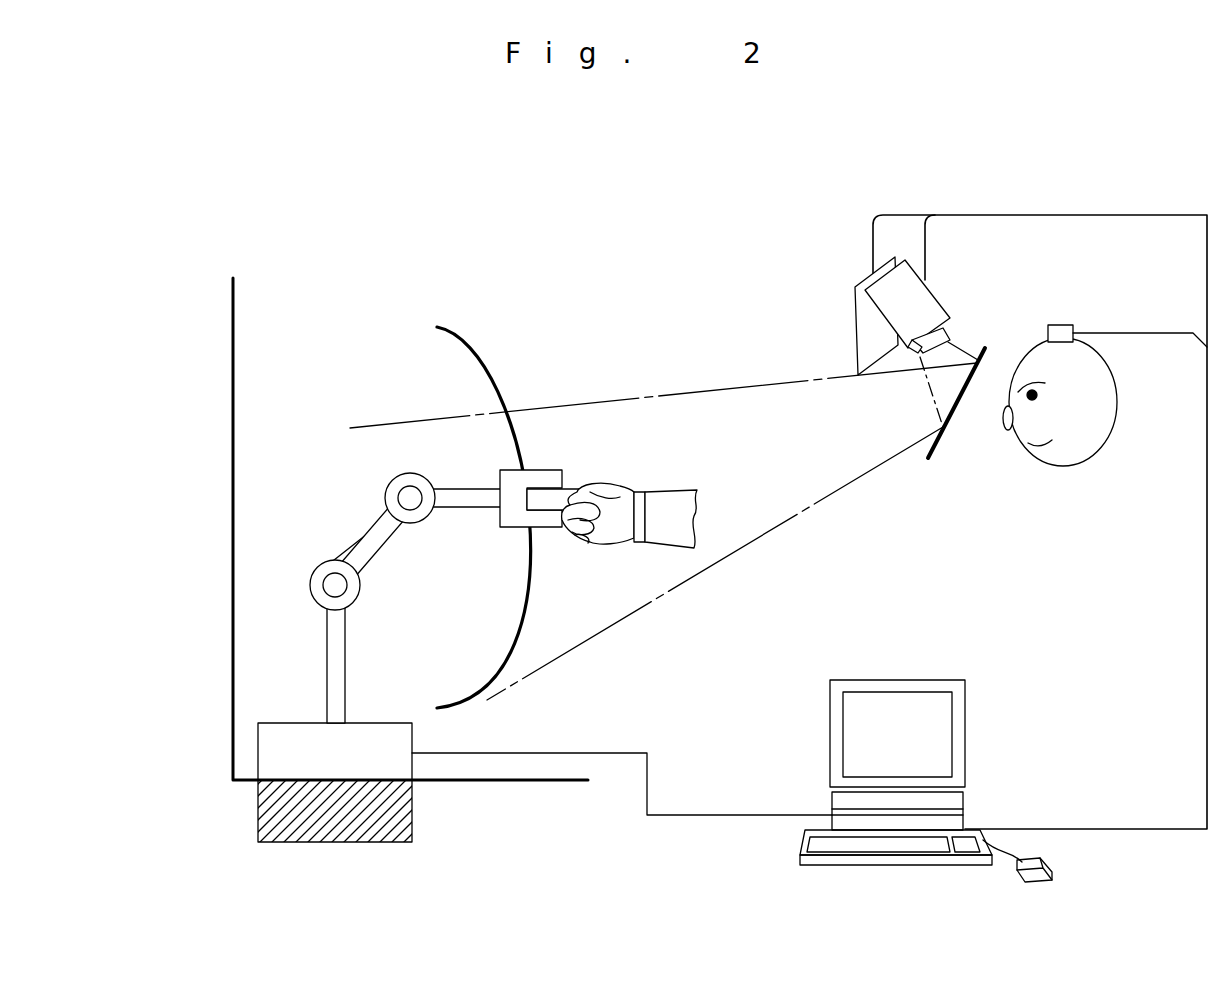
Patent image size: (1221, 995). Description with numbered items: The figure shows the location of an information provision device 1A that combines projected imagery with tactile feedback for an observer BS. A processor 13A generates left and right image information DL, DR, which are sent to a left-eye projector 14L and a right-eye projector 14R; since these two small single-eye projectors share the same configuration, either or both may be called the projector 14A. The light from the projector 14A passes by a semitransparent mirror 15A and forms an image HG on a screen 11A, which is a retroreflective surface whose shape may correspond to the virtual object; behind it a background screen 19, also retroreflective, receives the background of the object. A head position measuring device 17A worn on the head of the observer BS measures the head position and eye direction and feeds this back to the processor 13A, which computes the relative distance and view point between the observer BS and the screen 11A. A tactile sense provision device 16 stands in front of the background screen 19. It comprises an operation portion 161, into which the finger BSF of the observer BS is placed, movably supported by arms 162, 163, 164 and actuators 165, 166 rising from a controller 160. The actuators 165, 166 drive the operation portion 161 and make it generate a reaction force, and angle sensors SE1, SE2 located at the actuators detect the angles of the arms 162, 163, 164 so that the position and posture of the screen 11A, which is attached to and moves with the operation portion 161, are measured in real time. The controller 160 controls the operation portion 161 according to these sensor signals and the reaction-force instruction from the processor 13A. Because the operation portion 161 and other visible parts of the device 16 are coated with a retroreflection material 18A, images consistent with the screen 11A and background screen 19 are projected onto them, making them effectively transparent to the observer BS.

The information provision device 1A is at (534, 208).
The screen 11A is at (466, 340).
The background screen 19 is at (233, 370).
The projector 14A is at (780, 312).
The right-eye projector 14R is at (860, 298).
The left-eye projector 14L is at (878, 317).
The right image information DR is at (845, 233).
The left image information DL is at (948, 233).
The semitransparent mirror 15A is at (935, 456).
The head position measuring device 17A is at (1070, 326).
The observer BS is at (1105, 410).
The processor 13A is at (925, 680).
The tactile sense provision device 16 is at (516, 667).
The controller 160 is at (375, 765).
The operation portion 161 is at (540, 472).
The arm 162 is at (462, 493).
The arm 163 is at (375, 555).
The arm 164 is at (340, 668).
The actuator 165 is at (425, 515).
The actuator 166 is at (352, 593).
The angle sensor SE1 is at (393, 484).
The angle sensor SE2 is at (318, 593).
The retroreflection material 18A is at (570, 475).
The finger BSF is at (545, 500).
The image HG is at (518, 627).